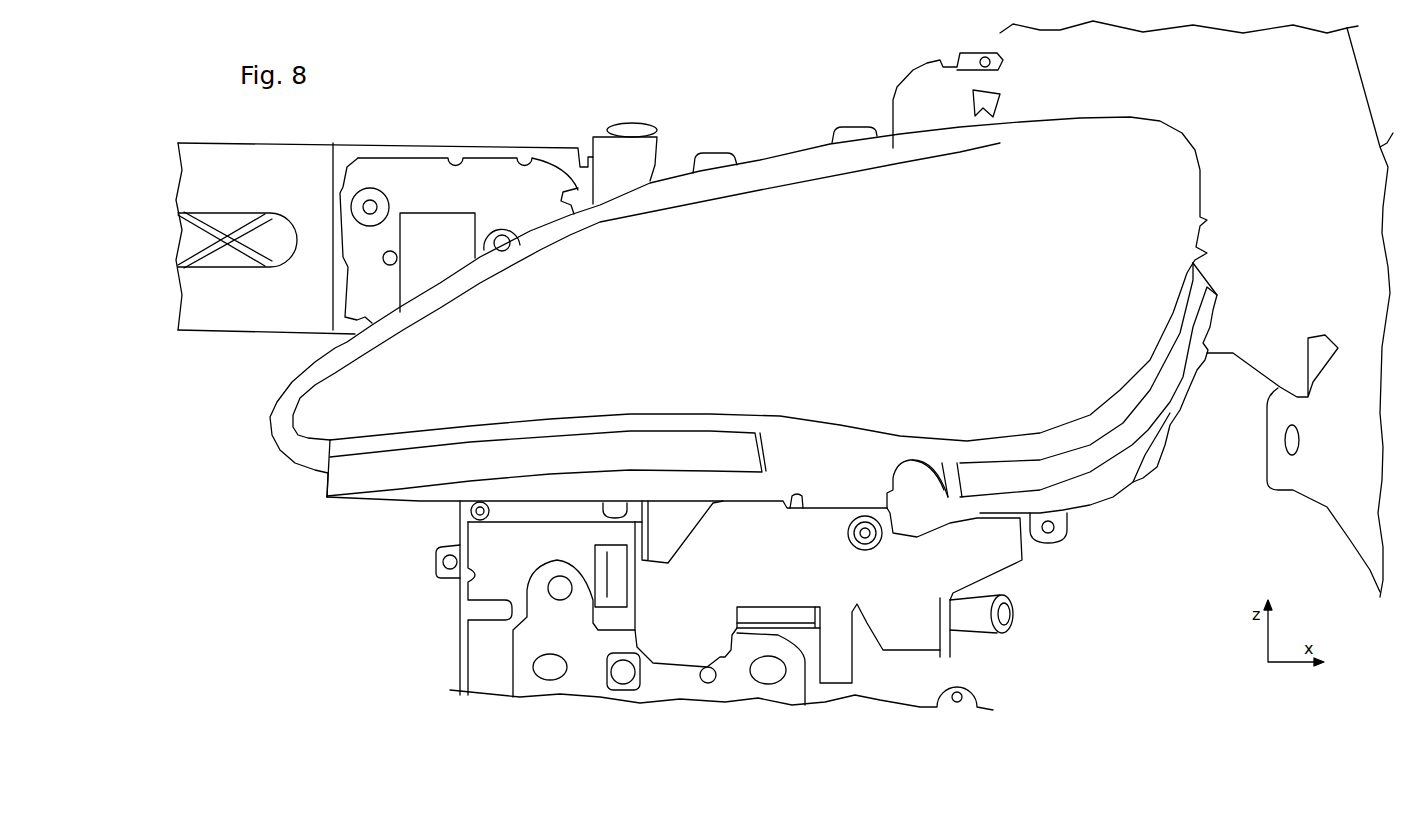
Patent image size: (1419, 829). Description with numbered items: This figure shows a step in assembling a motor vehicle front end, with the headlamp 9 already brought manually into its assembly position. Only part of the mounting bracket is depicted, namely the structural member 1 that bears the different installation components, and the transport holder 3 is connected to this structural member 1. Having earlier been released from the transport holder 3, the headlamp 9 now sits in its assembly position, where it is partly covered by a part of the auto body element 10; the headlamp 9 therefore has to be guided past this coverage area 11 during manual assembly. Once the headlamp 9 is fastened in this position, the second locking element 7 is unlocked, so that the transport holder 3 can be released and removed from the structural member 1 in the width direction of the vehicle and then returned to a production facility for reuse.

The structural member 1 is at (457, 633).
The transport holder 3 is at (1025, 552).
The second locking element 7 is at (953, 633).
The headlamp 9 is at (795, 303).
The auto body element 10 is at (1264, 106).
The coverage area 11 is at (1013, 23).